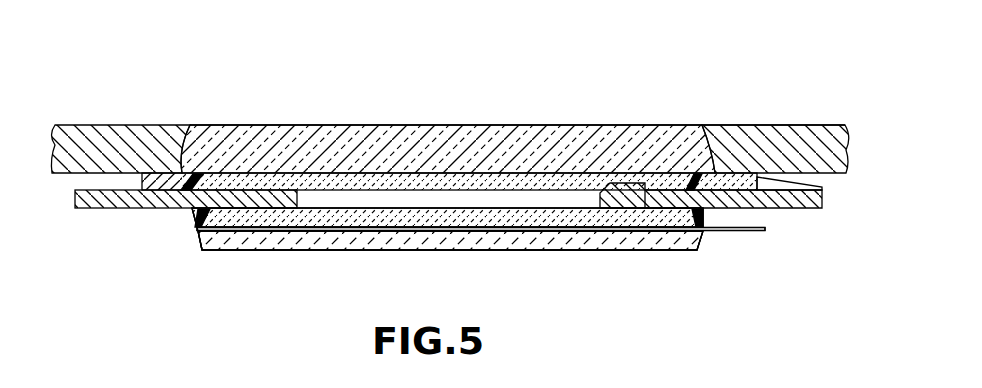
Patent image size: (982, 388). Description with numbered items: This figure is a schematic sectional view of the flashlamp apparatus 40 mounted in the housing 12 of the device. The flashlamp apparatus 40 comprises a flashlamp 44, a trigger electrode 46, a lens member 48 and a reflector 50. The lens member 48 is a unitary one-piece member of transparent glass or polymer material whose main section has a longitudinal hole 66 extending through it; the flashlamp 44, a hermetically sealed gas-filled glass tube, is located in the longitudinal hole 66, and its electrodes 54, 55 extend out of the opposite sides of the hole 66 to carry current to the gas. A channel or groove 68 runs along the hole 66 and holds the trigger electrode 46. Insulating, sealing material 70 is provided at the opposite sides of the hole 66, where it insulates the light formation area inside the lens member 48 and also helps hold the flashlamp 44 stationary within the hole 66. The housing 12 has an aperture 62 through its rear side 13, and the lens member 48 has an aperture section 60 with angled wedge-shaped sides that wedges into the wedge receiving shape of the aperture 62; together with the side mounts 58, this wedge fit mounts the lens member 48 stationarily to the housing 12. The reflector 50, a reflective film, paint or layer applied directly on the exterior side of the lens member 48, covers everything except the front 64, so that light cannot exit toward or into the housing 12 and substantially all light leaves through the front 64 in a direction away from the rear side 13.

The housing 12 is at (807, 142).
The rear side 13 is at (773, 127).
The flashlamp apparatus 40 is at (203, 250).
The flashlamp 44 is at (547, 218).
The trigger electrode 46 is at (755, 230).
The lens member 48 is at (637, 248).
The reflector 50 is at (250, 250).
The electrode 54 is at (815, 210).
The electrode 55 is at (93, 210).
The side mounts 58 is at (822, 188).
The aperture section 60 is at (605, 142).
The aperture 62 is at (708, 155).
The front 64 is at (410, 125).
The longitudinal hole 66 is at (475, 172).
The groove 68 is at (227, 237).
The insulating, sealing material 70 is at (198, 223).